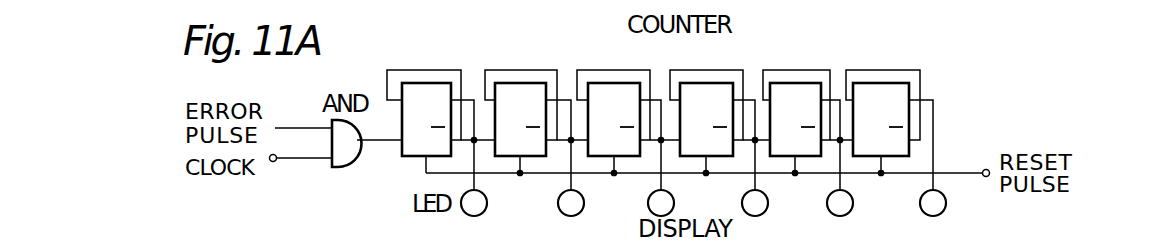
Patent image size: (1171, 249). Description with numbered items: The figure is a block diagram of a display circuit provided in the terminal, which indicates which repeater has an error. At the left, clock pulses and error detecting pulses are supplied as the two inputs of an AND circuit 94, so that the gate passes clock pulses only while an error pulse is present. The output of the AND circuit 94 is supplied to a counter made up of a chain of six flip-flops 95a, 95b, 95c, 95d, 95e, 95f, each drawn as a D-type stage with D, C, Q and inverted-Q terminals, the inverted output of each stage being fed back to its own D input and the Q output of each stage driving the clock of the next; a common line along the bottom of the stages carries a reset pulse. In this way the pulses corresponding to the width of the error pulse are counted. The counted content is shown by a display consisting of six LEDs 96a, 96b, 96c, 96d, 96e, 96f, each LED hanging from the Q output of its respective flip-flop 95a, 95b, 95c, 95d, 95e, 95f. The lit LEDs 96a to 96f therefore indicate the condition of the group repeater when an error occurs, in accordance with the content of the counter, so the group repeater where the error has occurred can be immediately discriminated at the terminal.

The AND circuit 94 is at (346, 167).
The flip-flop 95a is at (426, 83).
The flip-flop 95b is at (520, 83).
The flip-flop 95c is at (614, 83).
The flip-flop 95d is at (706, 83).
The flip-flop 95e is at (795, 83).
The flip-flop 95f is at (881, 83).
The LED 96a is at (487, 203).
The LED 96b is at (584, 203).
The LED 96c is at (674, 203).
The LED 96d is at (768, 203).
The LED 96e is at (853, 203).
The LED 96f is at (946, 203).